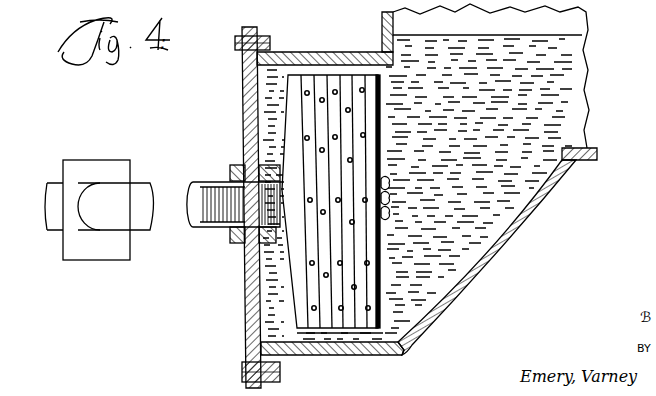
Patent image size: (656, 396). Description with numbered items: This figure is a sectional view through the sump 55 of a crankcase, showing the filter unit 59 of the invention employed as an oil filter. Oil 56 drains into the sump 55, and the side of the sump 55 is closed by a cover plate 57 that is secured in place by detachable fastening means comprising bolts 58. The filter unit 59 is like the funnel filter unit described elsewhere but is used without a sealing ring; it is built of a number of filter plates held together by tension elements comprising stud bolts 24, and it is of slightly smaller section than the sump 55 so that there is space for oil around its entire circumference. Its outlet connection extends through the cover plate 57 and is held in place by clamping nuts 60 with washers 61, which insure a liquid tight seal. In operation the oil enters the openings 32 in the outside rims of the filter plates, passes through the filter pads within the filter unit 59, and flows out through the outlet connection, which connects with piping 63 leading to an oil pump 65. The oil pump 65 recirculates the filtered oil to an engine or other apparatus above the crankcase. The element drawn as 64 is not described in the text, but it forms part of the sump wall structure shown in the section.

The stud bolts 24 is at (391, 213).
The openings 32 is at (355, 224).
The sump 55 is at (488, 261).
The oil 56 is at (499, 47).
The cover plate 57 is at (248, 291).
The bolts 58 is at (236, 48).
The filter unit 59 is at (354, 334).
The clamping nuts 60 is at (252, 246).
The washers 61 is at (258, 162).
The piping 63 is at (136, 196).
The flange 64 is at (548, 192).
The oil pump 65 is at (93, 254).